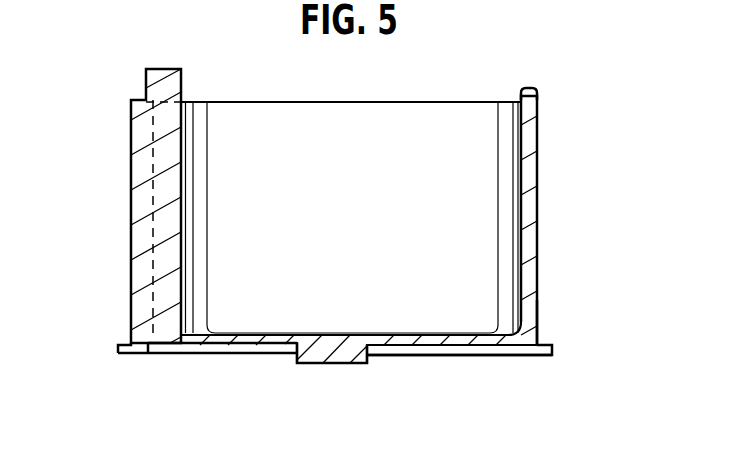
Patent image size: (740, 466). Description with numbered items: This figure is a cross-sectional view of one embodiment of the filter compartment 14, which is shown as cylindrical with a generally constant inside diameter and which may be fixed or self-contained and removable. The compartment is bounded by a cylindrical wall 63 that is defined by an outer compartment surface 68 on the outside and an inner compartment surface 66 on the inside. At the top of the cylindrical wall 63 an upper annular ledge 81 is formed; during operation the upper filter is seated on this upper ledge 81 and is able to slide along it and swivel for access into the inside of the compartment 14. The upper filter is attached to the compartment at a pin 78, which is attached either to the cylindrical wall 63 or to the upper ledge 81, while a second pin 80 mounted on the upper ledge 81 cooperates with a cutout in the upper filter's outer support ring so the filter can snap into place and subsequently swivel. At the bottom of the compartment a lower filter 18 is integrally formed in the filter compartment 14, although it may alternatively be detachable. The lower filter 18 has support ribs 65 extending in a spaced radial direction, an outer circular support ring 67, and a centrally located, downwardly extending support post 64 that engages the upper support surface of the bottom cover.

The filter compartment 14 is at (578, 218).
The lower filter 18 is at (230, 345).
The cylindrical wall 63 is at (533, 268).
The support post 64 is at (367, 363).
The support ribs 65 is at (498, 357).
The inner compartment surface 66 is at (518, 220).
The outer circular support ring 67 is at (118, 344).
The outer compartment surface 68 is at (525, 303).
The pin 78 is at (150, 76).
The pin 80 is at (534, 90).
The upper annular ledge 81 is at (482, 102).